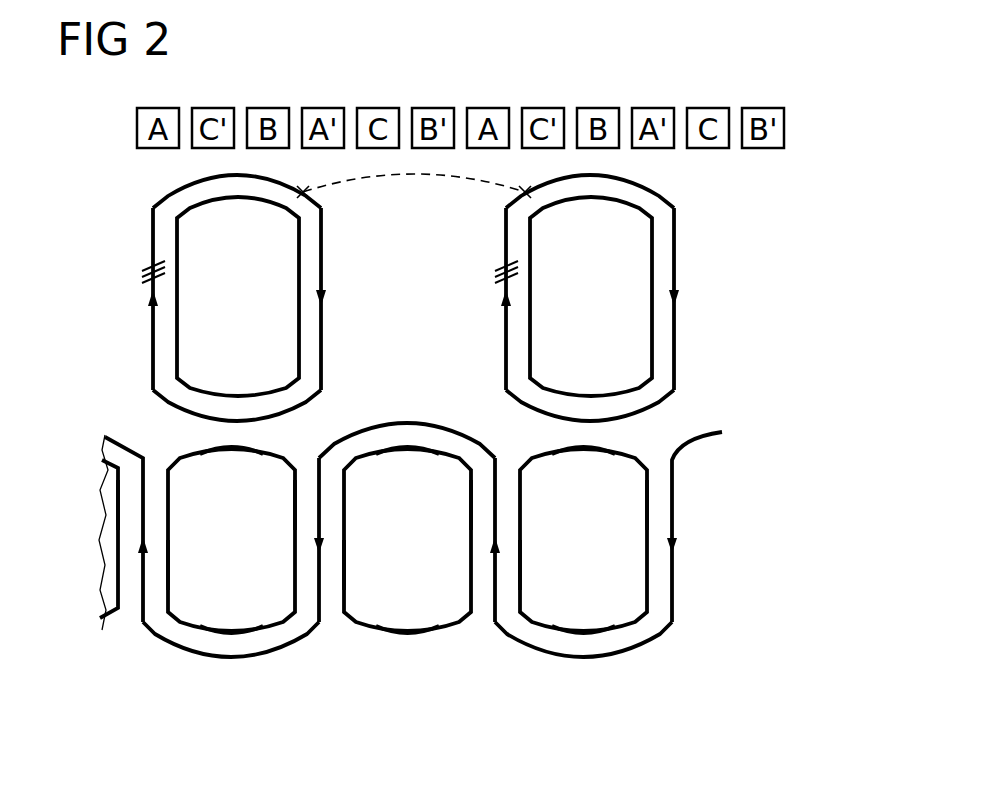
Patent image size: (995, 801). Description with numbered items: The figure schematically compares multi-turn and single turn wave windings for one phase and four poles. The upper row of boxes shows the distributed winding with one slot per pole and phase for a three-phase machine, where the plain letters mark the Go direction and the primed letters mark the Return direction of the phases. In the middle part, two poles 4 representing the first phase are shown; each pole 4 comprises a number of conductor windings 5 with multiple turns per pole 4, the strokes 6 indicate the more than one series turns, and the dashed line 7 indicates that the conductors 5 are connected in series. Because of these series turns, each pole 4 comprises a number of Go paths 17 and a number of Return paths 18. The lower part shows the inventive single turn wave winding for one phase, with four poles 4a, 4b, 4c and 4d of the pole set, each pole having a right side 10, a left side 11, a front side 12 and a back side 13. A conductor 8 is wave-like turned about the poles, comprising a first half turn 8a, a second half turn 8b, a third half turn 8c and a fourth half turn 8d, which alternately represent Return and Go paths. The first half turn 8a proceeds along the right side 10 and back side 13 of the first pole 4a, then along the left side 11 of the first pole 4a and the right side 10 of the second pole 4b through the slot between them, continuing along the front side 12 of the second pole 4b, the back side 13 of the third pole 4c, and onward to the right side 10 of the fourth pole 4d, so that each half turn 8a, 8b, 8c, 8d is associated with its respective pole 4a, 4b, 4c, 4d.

The pole 4 is at (188, 352).
The first pole 4a is at (546, 606).
The second pole 4b is at (370, 606).
The third pole 4c is at (194, 606).
The fourth pole 4d is at (106, 605).
The conductor winding 5 is at (140, 209).
The strokes 6 is at (142, 273).
The dashed line 7 is at (422, 175).
The conductor 8 is at (645, 658).
The first half turn 8a is at (674, 580).
The second half turn 8b is at (495, 580).
The third half turn 8c is at (319, 580).
The fourth half turn 8d is at (143, 580).
The right side 10 is at (118, 509).
The left side 11 is at (160, 553).
The front side 12 is at (543, 455).
The back side 13 is at (233, 632).
The Go path 17 is at (153, 326).
The Return path 18 is at (323, 326).